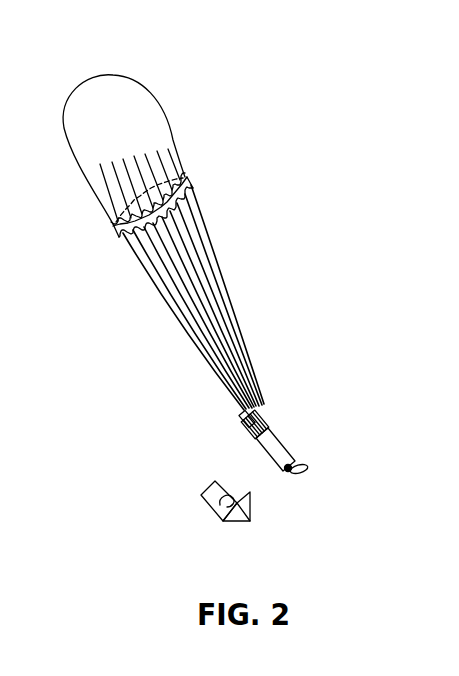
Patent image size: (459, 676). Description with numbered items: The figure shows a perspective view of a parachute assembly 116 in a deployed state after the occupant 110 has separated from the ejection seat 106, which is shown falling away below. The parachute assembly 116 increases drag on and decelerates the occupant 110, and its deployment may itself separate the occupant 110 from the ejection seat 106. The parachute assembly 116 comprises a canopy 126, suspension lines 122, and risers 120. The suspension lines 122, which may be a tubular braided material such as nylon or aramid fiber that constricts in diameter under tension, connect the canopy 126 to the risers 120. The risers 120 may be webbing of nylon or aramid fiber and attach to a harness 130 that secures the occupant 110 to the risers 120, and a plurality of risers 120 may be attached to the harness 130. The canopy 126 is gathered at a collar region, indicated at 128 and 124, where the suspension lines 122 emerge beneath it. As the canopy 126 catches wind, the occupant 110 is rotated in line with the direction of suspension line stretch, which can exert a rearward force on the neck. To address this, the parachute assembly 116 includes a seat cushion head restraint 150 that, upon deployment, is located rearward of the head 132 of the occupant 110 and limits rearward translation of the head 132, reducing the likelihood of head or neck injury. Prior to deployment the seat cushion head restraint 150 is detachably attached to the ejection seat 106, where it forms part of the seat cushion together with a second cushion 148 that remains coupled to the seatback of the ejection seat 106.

The parachute assembly 116 is at (80, 60).
The canopy 126 is at (124, 124).
The collar ring 128 is at (180, 174).
The collar lower edge 124 is at (123, 236).
The suspension lines 122 is at (209, 244).
The risers 120 is at (263, 380).
The head 132 is at (262, 416).
The seat cushion head restraint 150 is at (242, 420).
The harness 130 is at (278, 430).
The occupant 110 is at (241, 446).
The ejection seat 106 is at (201, 494).
The second cushion 148 is at (221, 507).